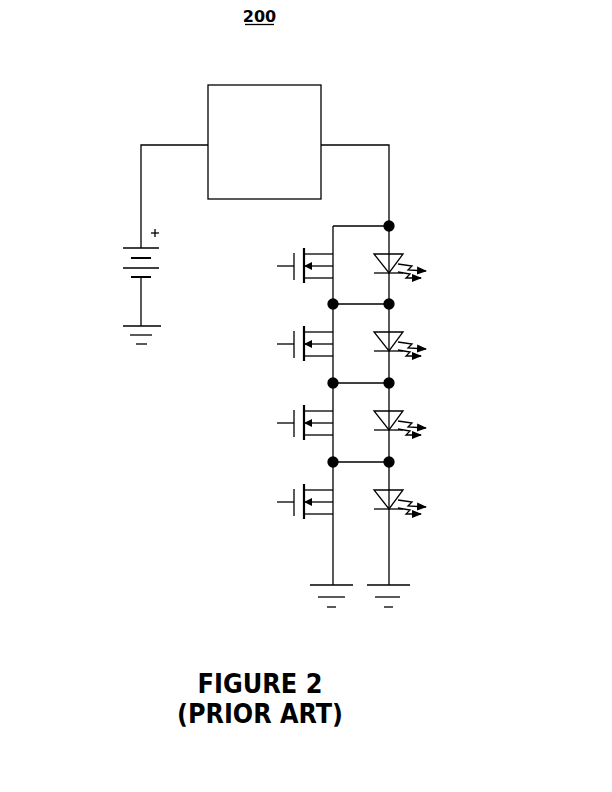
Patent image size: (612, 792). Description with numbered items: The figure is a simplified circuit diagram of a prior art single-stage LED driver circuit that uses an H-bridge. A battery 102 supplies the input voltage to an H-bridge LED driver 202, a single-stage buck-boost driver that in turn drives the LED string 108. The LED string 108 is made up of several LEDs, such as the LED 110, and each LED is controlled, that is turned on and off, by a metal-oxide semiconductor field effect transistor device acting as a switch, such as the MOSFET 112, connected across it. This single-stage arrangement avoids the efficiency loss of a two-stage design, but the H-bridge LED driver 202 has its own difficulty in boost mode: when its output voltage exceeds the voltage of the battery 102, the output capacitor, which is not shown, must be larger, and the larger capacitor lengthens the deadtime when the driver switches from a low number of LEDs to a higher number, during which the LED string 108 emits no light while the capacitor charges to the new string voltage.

The H-bridge LED driver 202 is at (207, 117).
The battery 102 is at (117, 258).
The LED string 108 is at (367, 363).
The LED 110 is at (427, 259).
The MOSFET device 112 is at (283, 254).